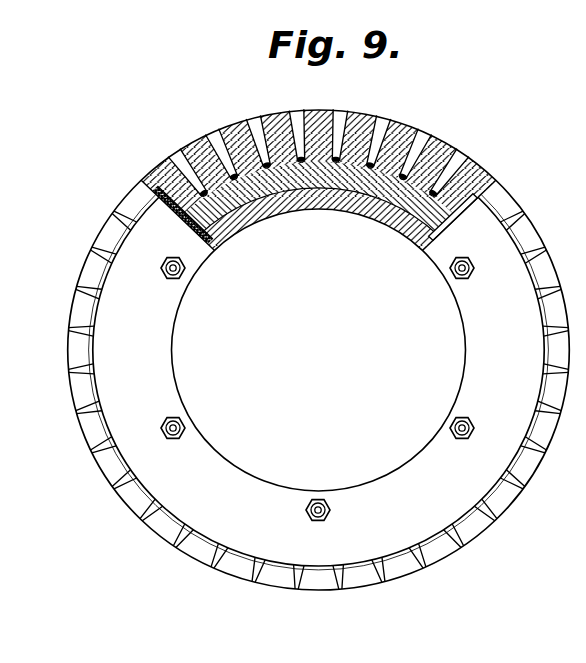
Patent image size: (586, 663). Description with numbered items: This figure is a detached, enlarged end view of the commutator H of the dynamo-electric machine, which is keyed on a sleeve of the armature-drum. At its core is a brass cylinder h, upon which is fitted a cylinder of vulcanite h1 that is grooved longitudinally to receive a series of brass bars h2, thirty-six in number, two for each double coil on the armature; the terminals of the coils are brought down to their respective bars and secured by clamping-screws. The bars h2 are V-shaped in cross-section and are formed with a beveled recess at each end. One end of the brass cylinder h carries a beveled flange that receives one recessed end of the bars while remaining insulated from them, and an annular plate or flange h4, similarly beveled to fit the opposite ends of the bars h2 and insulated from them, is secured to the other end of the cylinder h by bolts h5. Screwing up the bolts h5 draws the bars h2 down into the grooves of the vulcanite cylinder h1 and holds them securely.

The commutator H is at (118, 207).
The brass cylinder h is at (338, 213).
The vulcanite cylinder h1 is at (307, 111).
The brass bars h2 is at (207, 147).
The annular plate or flange h4 is at (318, 350).
The bolts h5 is at (163, 269).